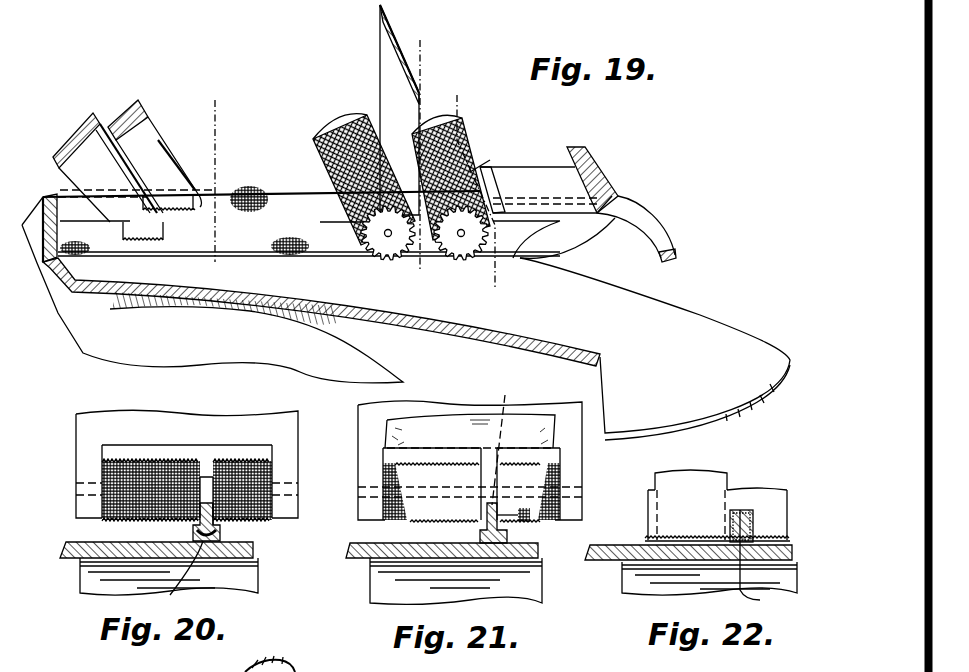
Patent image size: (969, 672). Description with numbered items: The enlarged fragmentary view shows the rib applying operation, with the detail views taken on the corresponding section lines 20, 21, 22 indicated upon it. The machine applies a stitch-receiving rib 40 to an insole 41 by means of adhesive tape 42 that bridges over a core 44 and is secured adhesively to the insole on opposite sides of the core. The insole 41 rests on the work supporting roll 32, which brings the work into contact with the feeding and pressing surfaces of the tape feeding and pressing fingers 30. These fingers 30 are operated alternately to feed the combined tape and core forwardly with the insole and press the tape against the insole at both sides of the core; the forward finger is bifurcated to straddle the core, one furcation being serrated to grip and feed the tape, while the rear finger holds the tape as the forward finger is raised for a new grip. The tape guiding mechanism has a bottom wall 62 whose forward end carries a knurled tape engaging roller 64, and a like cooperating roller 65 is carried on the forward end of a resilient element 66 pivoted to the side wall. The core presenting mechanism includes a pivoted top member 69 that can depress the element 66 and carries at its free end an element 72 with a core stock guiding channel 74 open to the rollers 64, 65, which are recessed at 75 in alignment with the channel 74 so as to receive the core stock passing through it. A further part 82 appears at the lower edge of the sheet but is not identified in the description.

In FIG. 19, the section line 20 is at (503, 290).
In FIG. 19, the section line 21 is at (428, 286).
In FIG. 19, the section line 22 is at (223, 265).
In FIG. 19, the tape feeding and pressing fingers 30 is at (143, 120).
In FIG. 22, the tape feeding and pressing fingers 30 is at (740, 483).
In FIG. 19, the work supporting roll 32 is at (370, 357).
In FIG. 20, the work supporting roll 32 is at (258, 590).
In FIG. 21, the work supporting roll 32 is at (510, 590).
In FIG. 22, the work supporting roll 32 is at (636, 594).
In FIG. 19, the stitch-receiving rib 40 is at (242, 190).
In FIG. 22, the stitch-receiving rib 40 is at (743, 515).
In FIG. 19, the insole 41 is at (715, 303).
In FIG. 20, the insole 41 is at (255, 552).
In FIG. 21, the insole 41 is at (353, 560).
In FIG. 22, the insole 41 is at (606, 560).
In FIG. 19, the adhesive tape 42 is at (380, 82).
In FIG. 21, the adhesive tape 42 is at (450, 425).
In FIG. 22, the adhesive tape 42 is at (648, 540).
In FIG. 19, the core 44 is at (670, 236).
In FIG. 20, the core 44 is at (176, 577).
In FIG. 21, the core 44 is at (530, 517).
In FIG. 22, the core 44 is at (762, 561).
In FIG. 21, the bottom wall 62 is at (368, 424).
In FIG. 19, the knurled tape engaging roller 64 is at (340, 140).
In FIG. 21, the knurled tape engaging roller 64 is at (560, 479).
In FIG. 19, the cooperating roller 65 is at (467, 171).
In FIG. 20, the cooperating roller 65 is at (103, 521).
In FIG. 20, the resilient element 66 is at (99, 420).
In FIG. 19, the top member 69 is at (598, 168).
In FIG. 19, the channeled element 72 is at (549, 165).
In FIG. 20, the channeled element 72 is at (220, 536).
In FIG. 19, the core stock guiding channel 74 is at (488, 188).
In FIG. 20, the core stock guiding channel 74 is at (193, 532).
In FIG. 21, the core stock guiding channel 74 is at (480, 538).
In FIG. 19, the roller recess 75 is at (320, 160).
In FIG. 20, the roller recess 75 is at (205, 472).
In FIG. 21, the roller recess 75 is at (500, 446).
In FIG. 20, the roller 82 is at (251, 661).